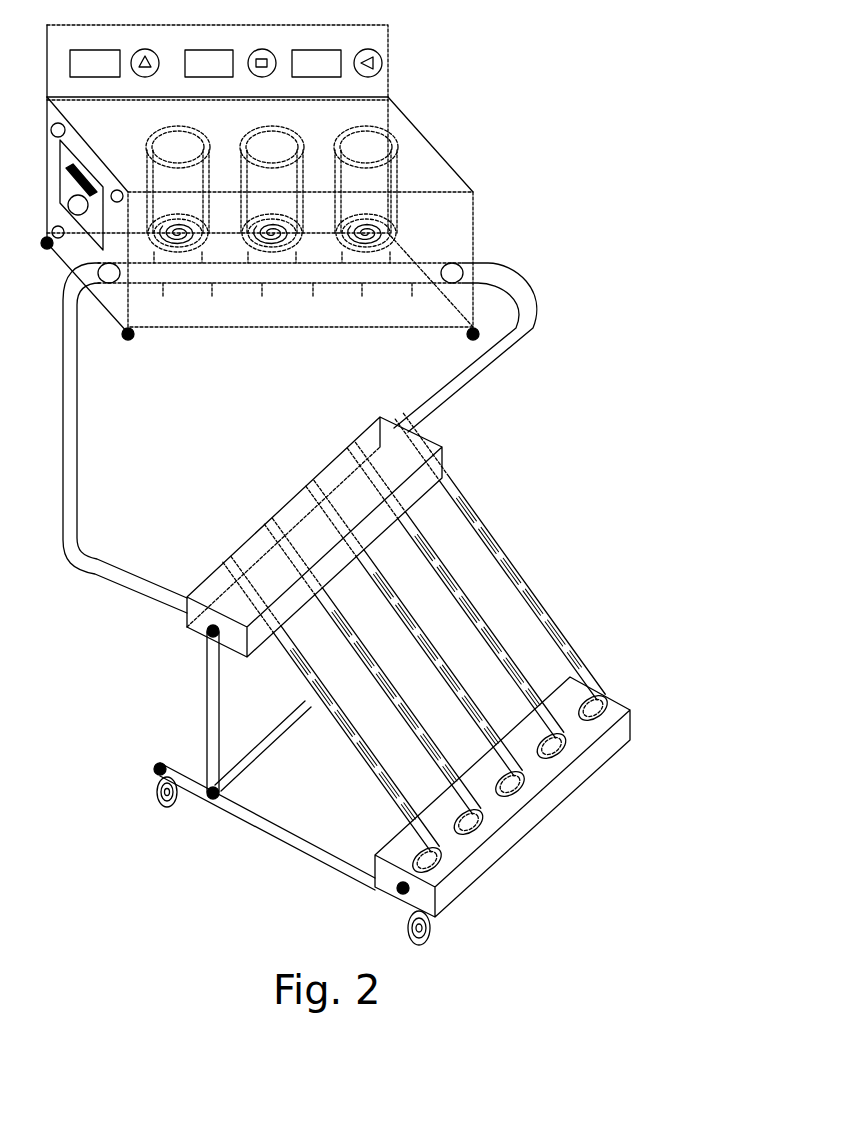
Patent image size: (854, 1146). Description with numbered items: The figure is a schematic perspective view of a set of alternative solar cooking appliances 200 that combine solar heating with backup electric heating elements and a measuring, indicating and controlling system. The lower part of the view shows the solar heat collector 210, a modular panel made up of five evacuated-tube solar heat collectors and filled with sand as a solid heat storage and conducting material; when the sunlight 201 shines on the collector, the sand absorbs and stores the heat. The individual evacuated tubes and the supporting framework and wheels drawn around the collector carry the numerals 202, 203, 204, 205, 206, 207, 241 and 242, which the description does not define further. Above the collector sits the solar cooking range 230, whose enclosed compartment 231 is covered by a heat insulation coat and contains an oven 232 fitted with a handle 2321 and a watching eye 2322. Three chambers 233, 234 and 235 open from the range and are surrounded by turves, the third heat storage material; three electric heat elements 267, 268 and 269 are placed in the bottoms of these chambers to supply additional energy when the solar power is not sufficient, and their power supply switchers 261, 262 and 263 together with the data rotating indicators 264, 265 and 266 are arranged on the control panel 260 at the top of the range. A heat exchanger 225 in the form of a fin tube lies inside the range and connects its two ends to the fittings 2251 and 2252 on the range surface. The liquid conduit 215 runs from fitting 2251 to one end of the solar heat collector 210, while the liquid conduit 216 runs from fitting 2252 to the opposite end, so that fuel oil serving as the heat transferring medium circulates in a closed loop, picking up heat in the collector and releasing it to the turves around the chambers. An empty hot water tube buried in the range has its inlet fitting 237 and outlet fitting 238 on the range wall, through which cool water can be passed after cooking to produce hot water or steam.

The solar cooking appliances 200 is at (438, 68).
The sunlight 201 is at (555, 650).
The heating tube 202 is at (450, 602).
The heating tube 203 is at (408, 640).
The heating tube 204 is at (367, 678).
The heating tube 205 is at (388, 793).
The pivot joint 206 is at (193, 627).
The frame bar 207 is at (207, 707).
The solar heat collector 210 is at (523, 558).
The liquid conduit 215 is at (482, 347).
The liquid conduit 216 is at (64, 378).
The heat exchanger 225 is at (262, 277).
The fitting 2251 is at (466, 266).
The fitting 2252 is at (80, 299).
The solar cooking range 230 is at (497, 226).
The enclosed compartment 231 is at (447, 178).
The oven 232 is at (70, 191).
The handle 2321 is at (50, 139).
The watching eye 2322 is at (63, 192).
The chamber 233 is at (381, 179).
The chamber 234 is at (284, 179).
The chamber 235 is at (188, 179).
The inlet fitting 237 is at (68, 120).
The outlet fitting 238 is at (126, 188).
The wheel 241 is at (158, 800).
The wheel 242 is at (432, 928).
The control panel 260 is at (249, 116).
The switcher 261 is at (373, 46).
The switcher 262 is at (268, 46).
The switcher 263 is at (148, 46).
The data rotating indicator 264 is at (325, 50).
The data rotating indicator 265 is at (212, 50).
The data rotating indicator 266 is at (97, 50).
The electric heat element 267 is at (382, 238).
The electric heat element 268 is at (286, 238).
The electric heat element 269 is at (189, 238).